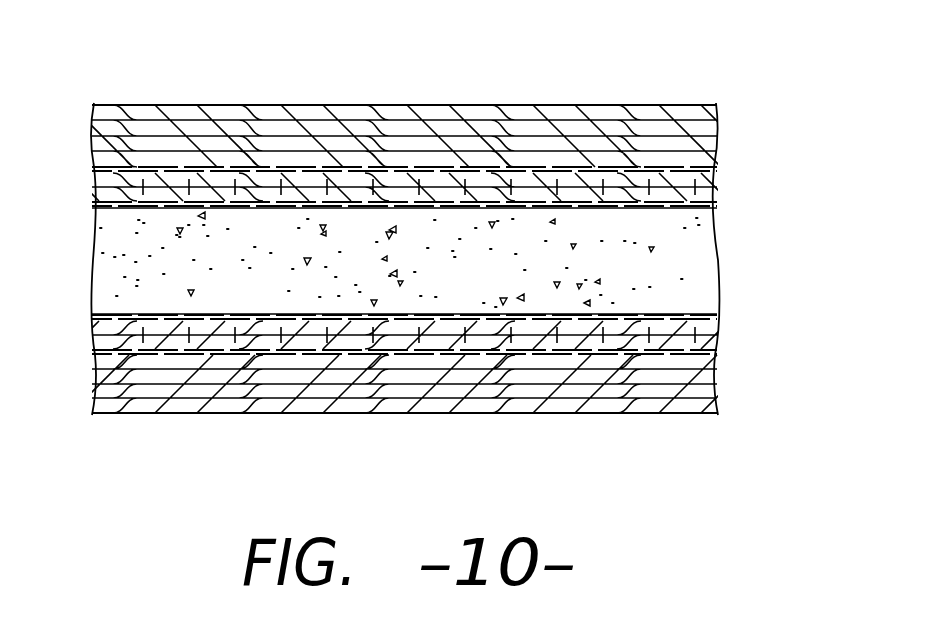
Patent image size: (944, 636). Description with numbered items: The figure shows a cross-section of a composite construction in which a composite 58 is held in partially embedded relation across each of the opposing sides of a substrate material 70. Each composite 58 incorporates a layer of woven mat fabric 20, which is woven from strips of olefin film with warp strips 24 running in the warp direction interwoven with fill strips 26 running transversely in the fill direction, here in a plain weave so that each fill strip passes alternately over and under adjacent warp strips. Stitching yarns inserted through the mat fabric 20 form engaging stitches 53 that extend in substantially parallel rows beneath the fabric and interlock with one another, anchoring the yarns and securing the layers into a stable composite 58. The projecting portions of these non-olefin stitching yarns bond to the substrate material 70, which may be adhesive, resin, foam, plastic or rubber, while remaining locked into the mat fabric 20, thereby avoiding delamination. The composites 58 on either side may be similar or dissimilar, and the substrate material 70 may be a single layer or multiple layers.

The mat fabric 20 is at (84, 142).
The warp strips 24 is at (597, 177).
The fill strips 26 is at (692, 183).
The composite 58 is at (394, 265).
The engaging stitches 53 is at (97, 212).
The substrate material 70 is at (708, 268).